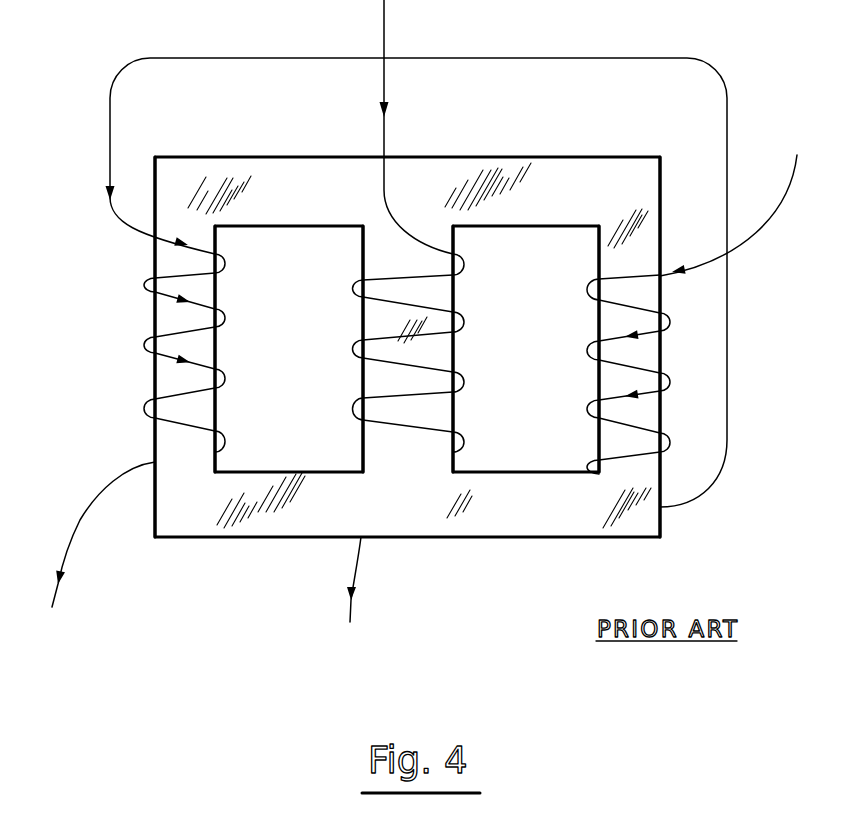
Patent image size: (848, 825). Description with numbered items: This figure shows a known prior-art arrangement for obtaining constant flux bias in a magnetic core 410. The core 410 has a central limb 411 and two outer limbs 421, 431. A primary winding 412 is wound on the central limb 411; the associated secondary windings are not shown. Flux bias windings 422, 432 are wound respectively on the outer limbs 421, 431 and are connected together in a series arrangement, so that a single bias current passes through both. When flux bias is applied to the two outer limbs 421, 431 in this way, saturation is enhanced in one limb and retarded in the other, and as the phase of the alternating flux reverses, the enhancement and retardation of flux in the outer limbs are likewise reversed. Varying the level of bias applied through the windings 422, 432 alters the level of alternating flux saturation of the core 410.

The core 410 is at (554, 171).
The central limb 411 is at (368, 378).
The primary winding 412 is at (352, 343).
The outer limb 421 is at (160, 367).
The flux bias winding 422 is at (133, 285).
The outer limb 431 is at (645, 299).
The flux bias winding 432 is at (692, 370).